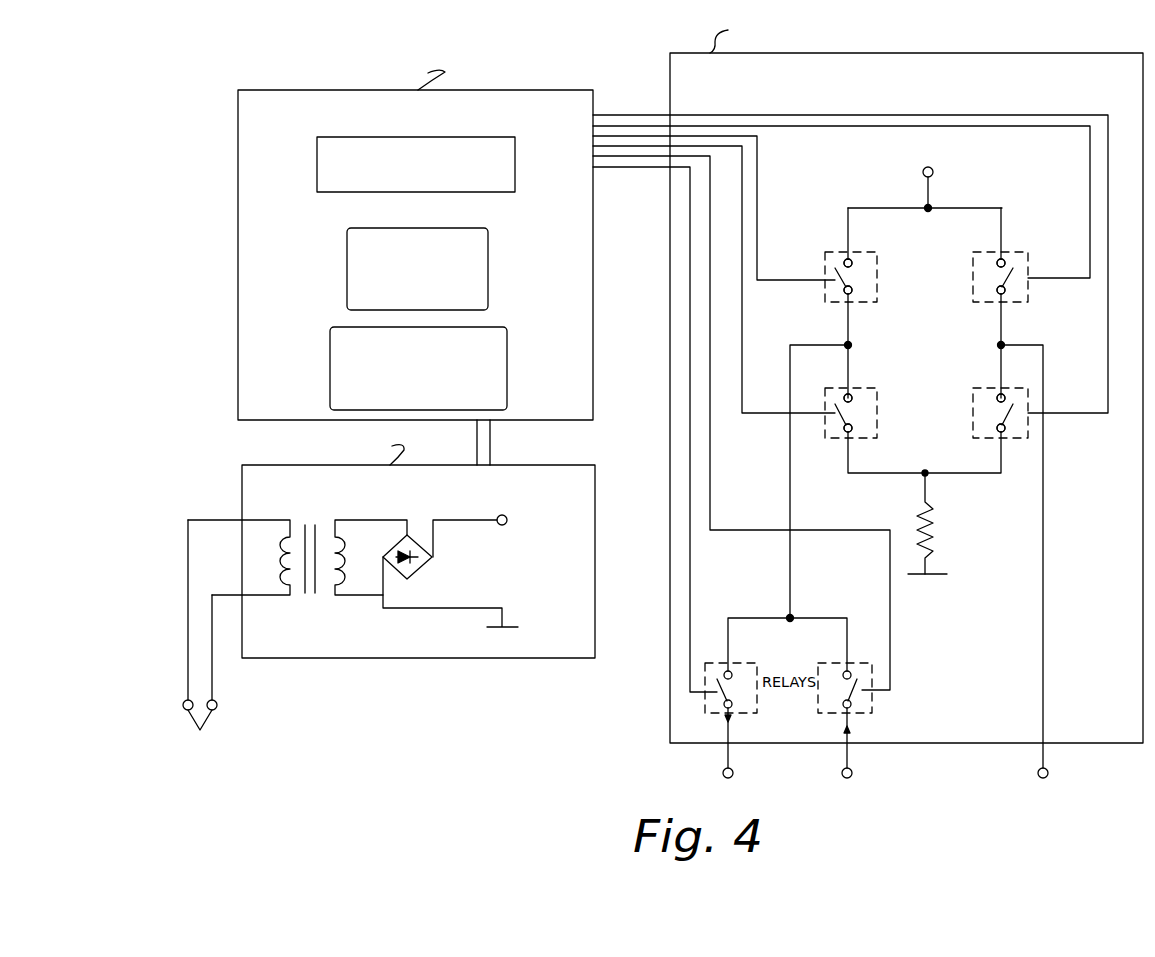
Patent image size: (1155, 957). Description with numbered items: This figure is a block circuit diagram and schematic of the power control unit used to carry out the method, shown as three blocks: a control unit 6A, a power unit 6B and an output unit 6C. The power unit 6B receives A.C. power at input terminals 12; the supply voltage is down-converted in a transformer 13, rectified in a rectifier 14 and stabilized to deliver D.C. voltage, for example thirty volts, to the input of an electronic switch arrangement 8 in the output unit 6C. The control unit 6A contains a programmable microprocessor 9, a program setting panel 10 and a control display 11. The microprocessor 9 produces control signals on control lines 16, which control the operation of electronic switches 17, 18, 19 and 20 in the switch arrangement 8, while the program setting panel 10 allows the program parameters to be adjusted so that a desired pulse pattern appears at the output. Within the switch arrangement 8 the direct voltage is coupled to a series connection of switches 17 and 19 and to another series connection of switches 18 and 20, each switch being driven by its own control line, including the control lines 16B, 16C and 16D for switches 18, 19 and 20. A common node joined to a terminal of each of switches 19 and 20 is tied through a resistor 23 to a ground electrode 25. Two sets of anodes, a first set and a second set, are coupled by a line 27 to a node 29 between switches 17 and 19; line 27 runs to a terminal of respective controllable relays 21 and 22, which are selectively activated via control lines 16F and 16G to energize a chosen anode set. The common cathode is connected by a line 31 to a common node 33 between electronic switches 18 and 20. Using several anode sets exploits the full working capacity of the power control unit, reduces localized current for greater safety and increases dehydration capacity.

The control unit 6A is at (508, 90).
The power unit 6B is at (437, 647).
The output unit 6C is at (1005, 53).
The electronic switch arrangement 8 is at (924, 186).
The programmable microprocessor 9 is at (362, 302).
The program setting panel 10 is at (338, 391).
The control display 11 is at (318, 170).
The input terminals 12 is at (200, 640).
The transformer 13 is at (298, 602).
The rectifier 14 is at (410, 537).
The control lines 16 is at (638, 102).
The control line 16B is at (1056, 278).
The control line 16C is at (766, 413).
The control line 16D is at (1070, 413).
The control line 16F is at (692, 626).
The control line 16G is at (890, 645).
The electronic switch 17 is at (877, 290).
The electronic switch 18 is at (976, 300).
The electronic switch 19 is at (877, 396).
The electronic switch 20 is at (973, 396).
The controllable relay 21 is at (705, 697).
The controllable relay 22 is at (873, 707).
The resistor 23 is at (930, 531).
The ground electrode 25 is at (947, 574).
The line 27 is at (794, 548).
The node 29 is at (846, 343).
The line 31 is at (1045, 520).
The common node 33 is at (1003, 344).